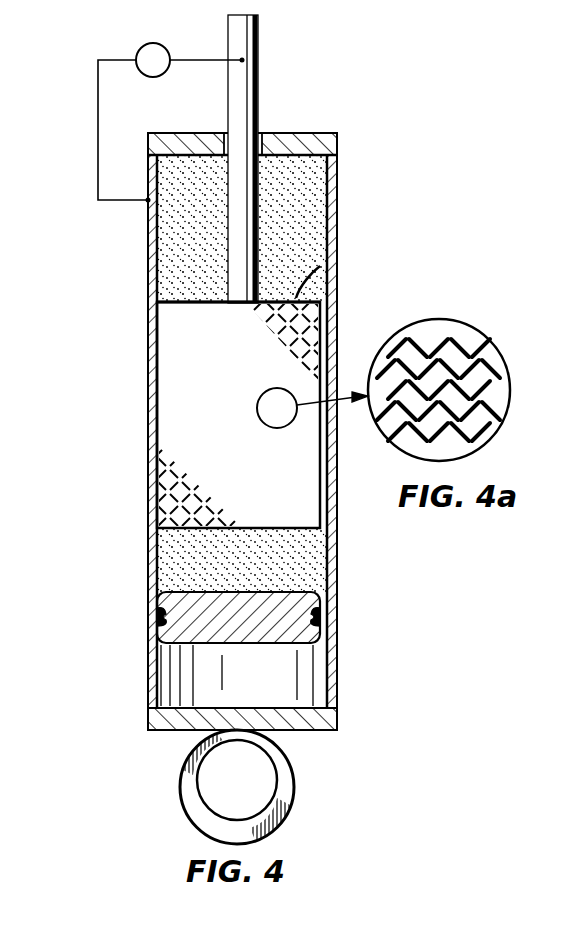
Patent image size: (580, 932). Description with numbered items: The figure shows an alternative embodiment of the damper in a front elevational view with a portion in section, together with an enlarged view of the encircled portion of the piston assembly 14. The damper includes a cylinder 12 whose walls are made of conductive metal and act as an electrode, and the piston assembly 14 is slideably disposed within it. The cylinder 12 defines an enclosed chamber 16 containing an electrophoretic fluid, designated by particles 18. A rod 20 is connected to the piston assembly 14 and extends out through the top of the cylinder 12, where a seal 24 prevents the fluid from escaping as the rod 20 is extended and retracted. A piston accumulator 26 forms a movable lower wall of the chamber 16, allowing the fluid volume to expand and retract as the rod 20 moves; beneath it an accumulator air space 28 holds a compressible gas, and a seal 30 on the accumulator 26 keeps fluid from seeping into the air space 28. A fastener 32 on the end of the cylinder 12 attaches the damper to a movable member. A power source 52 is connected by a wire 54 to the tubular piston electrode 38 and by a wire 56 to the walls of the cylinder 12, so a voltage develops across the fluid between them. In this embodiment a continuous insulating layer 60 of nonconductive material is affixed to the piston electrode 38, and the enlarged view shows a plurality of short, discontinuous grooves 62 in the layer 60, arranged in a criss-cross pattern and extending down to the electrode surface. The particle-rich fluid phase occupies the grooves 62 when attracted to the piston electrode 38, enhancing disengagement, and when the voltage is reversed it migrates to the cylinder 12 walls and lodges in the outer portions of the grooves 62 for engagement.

In FIG. 4, the cylinder 12 is at (148, 262).
In FIG. 4, the piston assembly 14 is at (320, 266).
In FIG. 4, the enclosed chamber 16 is at (305, 228).
In FIG. 4, the particles 18 is at (173, 226).
In FIG. 4, the rod 20 is at (258, 66).
In FIG. 4, the seal 24 is at (262, 134).
In FIG. 4, the piston accumulator 26 is at (178, 596).
In FIG. 4, the accumulator air space 28 is at (257, 684).
In FIG. 4, the seal 30 is at (157, 612).
In FIG. 4, the fastener 32 is at (180, 782).
In FIG. 4, the piston electrode 38 is at (157, 302).
In FIG. 4, the power source 52 is at (151, 43).
In FIG. 4, the wire 54 is at (194, 60).
In FIG. 4, the wire 56 is at (98, 82).
In FIG. 4, the insulating layer 60 is at (168, 402).
In FIG. 4a, the insulating layer 60 is at (440, 320).
In FIG. 4a, the grooves 62 is at (475, 372).